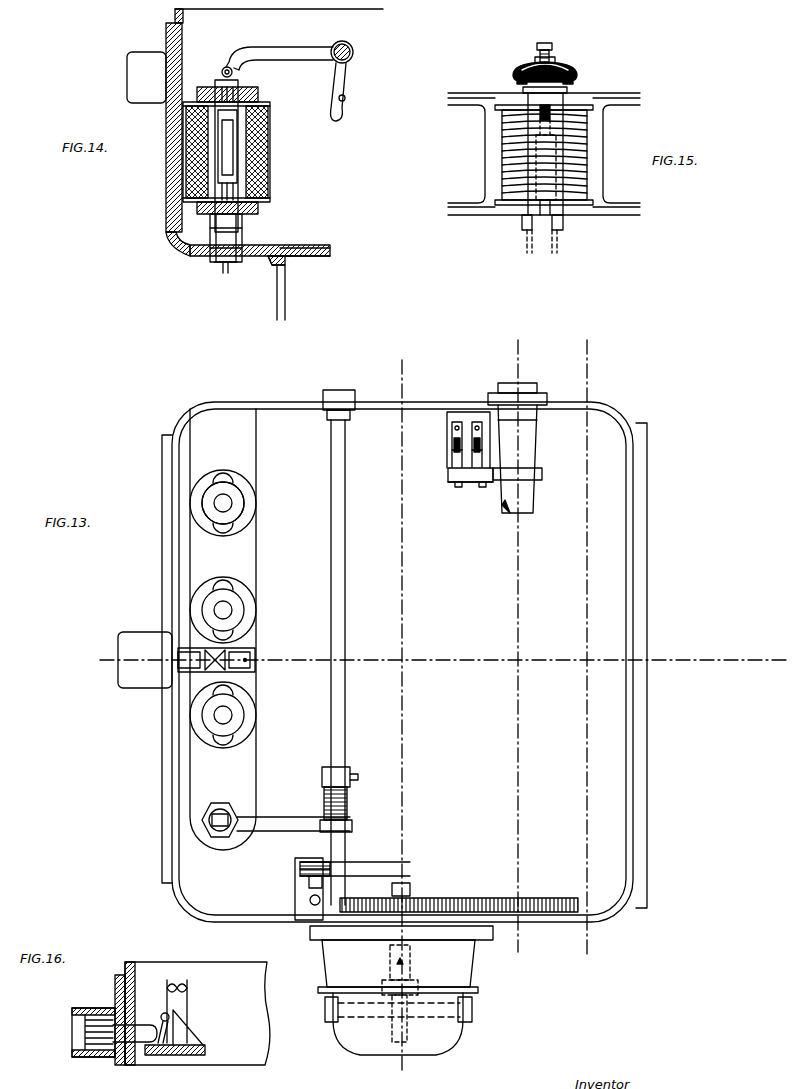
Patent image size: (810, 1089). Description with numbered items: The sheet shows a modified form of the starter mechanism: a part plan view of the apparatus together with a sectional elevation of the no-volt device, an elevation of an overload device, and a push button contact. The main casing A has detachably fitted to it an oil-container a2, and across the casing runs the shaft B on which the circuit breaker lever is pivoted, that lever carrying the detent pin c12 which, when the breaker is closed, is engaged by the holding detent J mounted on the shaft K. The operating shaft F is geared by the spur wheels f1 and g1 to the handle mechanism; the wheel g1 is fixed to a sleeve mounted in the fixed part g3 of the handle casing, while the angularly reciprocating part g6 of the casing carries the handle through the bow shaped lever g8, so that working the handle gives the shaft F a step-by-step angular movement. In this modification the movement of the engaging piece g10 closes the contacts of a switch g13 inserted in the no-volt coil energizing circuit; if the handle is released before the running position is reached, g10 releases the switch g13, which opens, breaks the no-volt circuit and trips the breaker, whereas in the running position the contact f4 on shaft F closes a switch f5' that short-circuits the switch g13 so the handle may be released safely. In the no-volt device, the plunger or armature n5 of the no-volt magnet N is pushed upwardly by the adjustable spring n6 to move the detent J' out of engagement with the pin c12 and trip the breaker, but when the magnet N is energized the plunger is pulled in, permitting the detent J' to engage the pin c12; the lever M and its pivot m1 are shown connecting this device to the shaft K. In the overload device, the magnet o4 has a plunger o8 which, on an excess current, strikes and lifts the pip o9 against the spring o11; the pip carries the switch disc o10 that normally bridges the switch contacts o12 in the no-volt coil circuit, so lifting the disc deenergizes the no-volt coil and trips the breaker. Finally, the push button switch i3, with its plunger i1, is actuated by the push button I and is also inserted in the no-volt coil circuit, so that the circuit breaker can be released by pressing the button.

In FIG. 14, the main casing A is at (187, 247).
In FIG. 13, the main casing A is at (178, 862).
In FIG. 16, the main casing A is at (248, 1027).
In FIG. 14, the oil-container a2 is at (277, 297).
In FIG. 13, the shaft B is at (588, 558).
In FIG. 14, the shaft K is at (358, 50).
In FIG. 13, the shaft K is at (338, 515).
In FIG. 14, the lever M is at (275, 53).
In FIG. 13, the lever M is at (270, 822).
In FIG. 14, the lever pivot m1 is at (222, 68).
In FIG. 14, the no-volt magnet N is at (258, 188).
In FIG. 14, the plunger or armature n5 is at (227, 147).
In FIG. 14, the adjustable spring n6 is at (242, 220).
In FIG. 13, the holding detent J is at (346, 799).
In FIG. 14, the detent J' is at (321, 92).
In FIG. 14, the detent pin c12 is at (345, 99).
In FIG. 13, the operating shaft F is at (527, 500).
In FIG. 13, the spur wheel f1 is at (530, 903).
In FIG. 13, the contact f4 is at (468, 477).
In FIG. 13, the switch f5' is at (449, 440).
In FIG. 13, the spur wheel g1 is at (382, 907).
In FIG. 13, the fixed part of the handle mechanism casing g3 is at (460, 962).
In FIG. 13, the angularly reciprocating part of the handle casing g6 is at (450, 1037).
In FIG. 13, the bow shaped lever g8 is at (472, 1008).
In FIG. 13, the engaging piece g10 is at (408, 882).
In FIG. 13, the switch g13 is at (362, 868).
In FIG. 15, the overload magnet o4 is at (577, 153).
In FIG. 13, the overload magnet o4 is at (247, 512).
In FIG. 15, the plunger o8 is at (520, 165).
In FIG. 15, the pip o9 is at (570, 67).
In FIG. 15, the switch disc o10 is at (537, 63).
In FIG. 13, the switch disc o10 is at (235, 500).
In FIG. 15, the spring o11 is at (552, 53).
In FIG. 13, the spring o11 is at (223, 477).
In FIG. 15, the switch contacts o12 is at (523, 63).
In FIG. 16, the push button I is at (78, 1027).
In FIG. 16, the plunger i1 is at (138, 1028).
In FIG. 16, the push button switch i3 is at (187, 987).